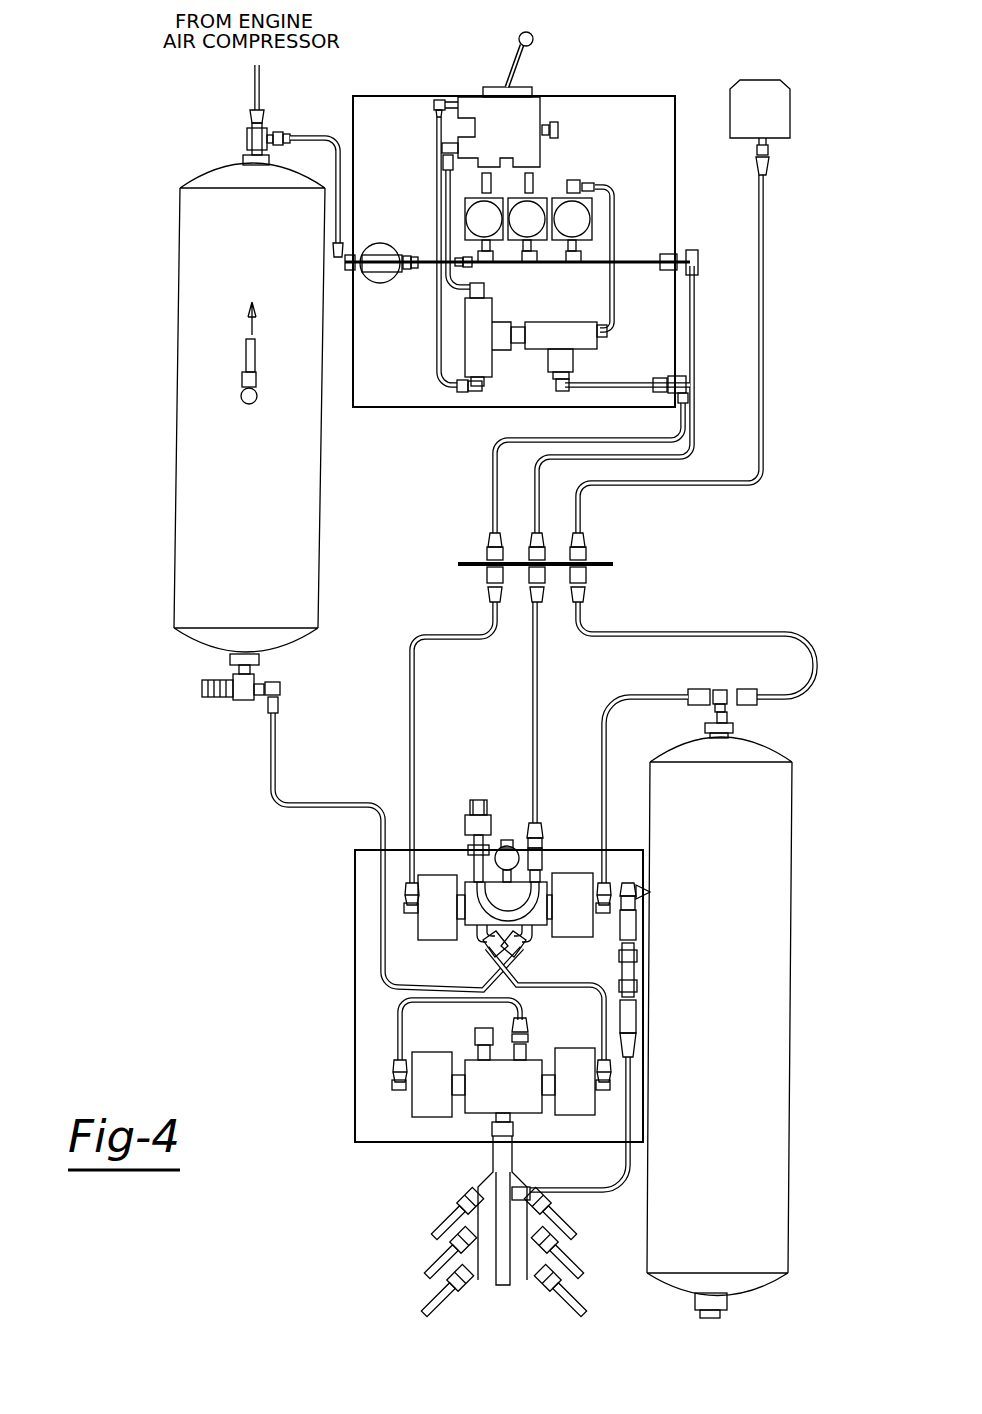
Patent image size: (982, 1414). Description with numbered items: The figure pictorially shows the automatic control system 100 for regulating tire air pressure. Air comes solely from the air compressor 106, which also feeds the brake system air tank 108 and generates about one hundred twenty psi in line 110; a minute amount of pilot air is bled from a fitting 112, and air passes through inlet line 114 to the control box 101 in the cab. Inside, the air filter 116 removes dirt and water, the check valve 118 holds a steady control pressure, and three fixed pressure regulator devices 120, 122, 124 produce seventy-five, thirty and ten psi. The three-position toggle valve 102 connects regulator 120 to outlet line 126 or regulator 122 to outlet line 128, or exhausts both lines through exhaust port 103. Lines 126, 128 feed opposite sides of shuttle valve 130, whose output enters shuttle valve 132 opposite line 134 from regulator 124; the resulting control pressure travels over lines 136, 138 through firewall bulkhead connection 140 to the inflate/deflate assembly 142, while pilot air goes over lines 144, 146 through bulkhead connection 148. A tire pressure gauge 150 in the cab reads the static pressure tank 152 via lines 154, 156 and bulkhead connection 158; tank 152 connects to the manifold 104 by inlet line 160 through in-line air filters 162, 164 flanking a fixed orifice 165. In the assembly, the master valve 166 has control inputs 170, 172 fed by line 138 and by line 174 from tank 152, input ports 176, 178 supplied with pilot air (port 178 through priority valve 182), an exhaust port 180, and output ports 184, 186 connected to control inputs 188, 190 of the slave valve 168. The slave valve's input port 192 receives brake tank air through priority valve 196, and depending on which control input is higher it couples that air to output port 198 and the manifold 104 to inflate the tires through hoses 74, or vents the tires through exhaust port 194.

The hoses 74 is at (432, 1300).
The automatic control system 100 is at (771, 364).
The control box 101 is at (644, 93).
The toggle valve 102 is at (531, 105).
The exhaust port 103 is at (559, 130).
The manifold 104 is at (493, 1268).
The air compressor 106 is at (400, 82).
The air tank 108 is at (189, 437).
The line 110 is at (253, 80).
The fitting 112 is at (247, 138).
The inlet line 114 is at (338, 97).
The air filter 116 is at (382, 241).
The check valve 118 is at (413, 272).
The pressure regulator device 120 is at (471, 217).
The pressure regulator device 122 is at (537, 233).
The pressure regulator device 124 is at (578, 240).
The outlet line 126 is at (435, 313).
The outlet line 128 is at (444, 363).
The shuttle valve 130 is at (487, 362).
The shuttle valve 132 is at (581, 360).
The line 134 is at (613, 217).
The line 136 is at (490, 480).
The line 138 is at (418, 705).
The firewall bulkhead connection 140 is at (483, 573).
The inflate/deflate assembly 142 is at (355, 1060).
The line 144 is at (533, 513).
The line 146 is at (541, 693).
The bulkhead connection 148 is at (528, 587).
The tire pressure gauge 150 is at (781, 118).
The static pressure tank 152 is at (781, 988).
The line 154 is at (762, 445).
The line 156 is at (806, 582).
The bulkhead connection 158 is at (586, 557).
The inlet line 160 is at (594, 1203).
The in line air filter 162 is at (633, 1020).
The in line air filter 164 is at (637, 927).
The fixed orifice 165 is at (637, 970).
The master valve 166 is at (543, 858).
The slave valve 168 is at (543, 1051).
The control input 170 is at (435, 933).
The control input 172 is at (573, 930).
The line 174 is at (611, 738).
The input port 176 is at (541, 880).
The input port 178 is at (473, 880).
The exhaust port 180 is at (505, 847).
The priority valve 182 is at (477, 803).
The output port 184 is at (481, 928).
The output port 186 is at (553, 927).
The control input 188 is at (570, 1107).
The control input 190 is at (412, 1112).
The input port 192 is at (541, 1028).
The exhaust port 194 is at (477, 1038).
The priority valve 196 is at (236, 700).
The output port 198 is at (493, 1118).